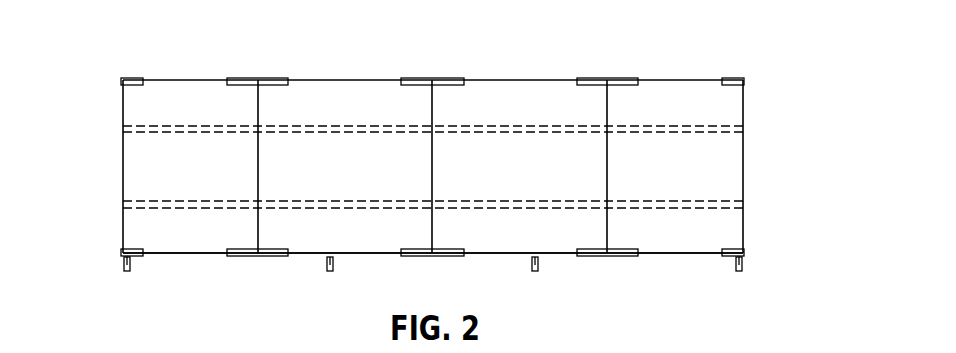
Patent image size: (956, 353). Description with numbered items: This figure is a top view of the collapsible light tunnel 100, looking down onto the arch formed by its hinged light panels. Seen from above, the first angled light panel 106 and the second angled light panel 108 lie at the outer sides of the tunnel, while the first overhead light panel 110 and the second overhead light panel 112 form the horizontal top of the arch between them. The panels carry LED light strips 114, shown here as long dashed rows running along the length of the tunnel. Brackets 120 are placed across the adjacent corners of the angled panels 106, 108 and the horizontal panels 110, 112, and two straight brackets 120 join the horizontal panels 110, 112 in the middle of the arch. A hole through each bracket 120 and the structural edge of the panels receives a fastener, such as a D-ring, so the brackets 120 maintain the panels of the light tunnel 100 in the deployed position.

The collapsible light tunnel 100 is at (737, 47).
The first angled light panel 106 is at (193, 237).
The second angled light panel 108 is at (667, 237).
The first overhead light panel 110 is at (375, 235).
The second overhead light panel 112 is at (483, 235).
The LED light strips 114 is at (122, 131).
The brackets 120 is at (245, 81).